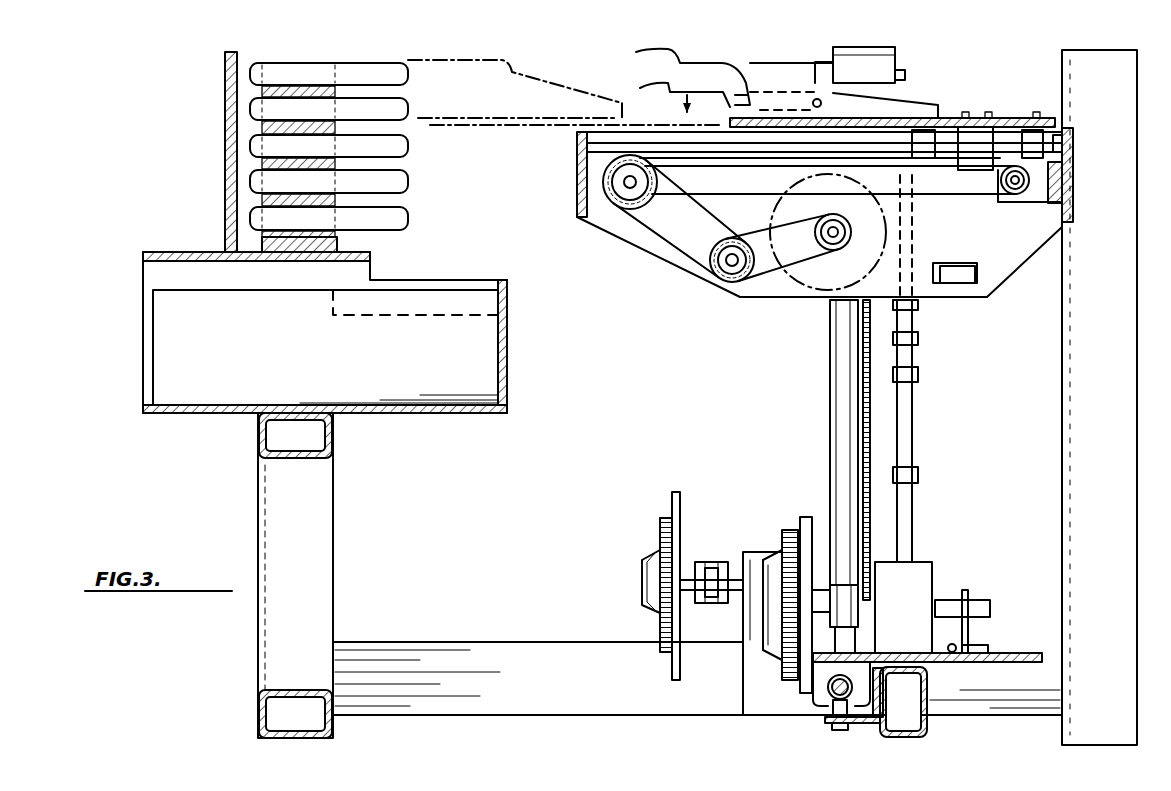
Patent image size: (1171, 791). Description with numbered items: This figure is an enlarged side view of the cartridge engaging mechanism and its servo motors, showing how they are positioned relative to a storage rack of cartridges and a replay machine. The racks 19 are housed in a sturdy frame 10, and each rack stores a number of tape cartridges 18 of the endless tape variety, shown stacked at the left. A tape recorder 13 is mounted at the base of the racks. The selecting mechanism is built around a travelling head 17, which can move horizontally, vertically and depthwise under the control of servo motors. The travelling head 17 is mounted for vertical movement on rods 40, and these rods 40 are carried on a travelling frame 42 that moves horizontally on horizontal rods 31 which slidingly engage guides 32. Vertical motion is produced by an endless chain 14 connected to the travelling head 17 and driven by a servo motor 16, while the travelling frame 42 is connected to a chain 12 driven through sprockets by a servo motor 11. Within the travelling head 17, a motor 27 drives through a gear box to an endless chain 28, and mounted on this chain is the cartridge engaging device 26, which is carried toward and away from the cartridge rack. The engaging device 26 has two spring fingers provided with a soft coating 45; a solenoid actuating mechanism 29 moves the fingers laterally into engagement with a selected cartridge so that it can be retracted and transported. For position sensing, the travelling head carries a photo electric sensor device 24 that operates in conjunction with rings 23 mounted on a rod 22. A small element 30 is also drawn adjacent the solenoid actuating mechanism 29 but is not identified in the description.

The frame 10 is at (360, 607).
The servo motor 11 is at (668, 520).
The chain 12 is at (956, 663).
The tape recorders 13 is at (406, 357).
The endless chain 14 is at (866, 402).
The servo motor 16 is at (790, 540).
The travelling head 17 is at (742, 314).
The tape cartridges 18 is at (409, 212).
The racks 19 is at (297, 246).
The rod 22 is at (906, 415).
The rings 23 is at (920, 340).
The photo electric sensor device 24 is at (958, 285).
The cartridge engaging device 26 is at (412, 66).
The motor 27 is at (815, 270).
The endless chain 28 is at (680, 198).
The solenoid actuating mechanism 29 is at (890, 65).
The switch 30 is at (905, 77).
The horizontal rods 31 is at (830, 700).
The guides 32 is at (822, 671).
The rods 40 is at (840, 375).
The travelling frame 42 is at (1016, 652).
The soft coating 45 is at (662, 86).